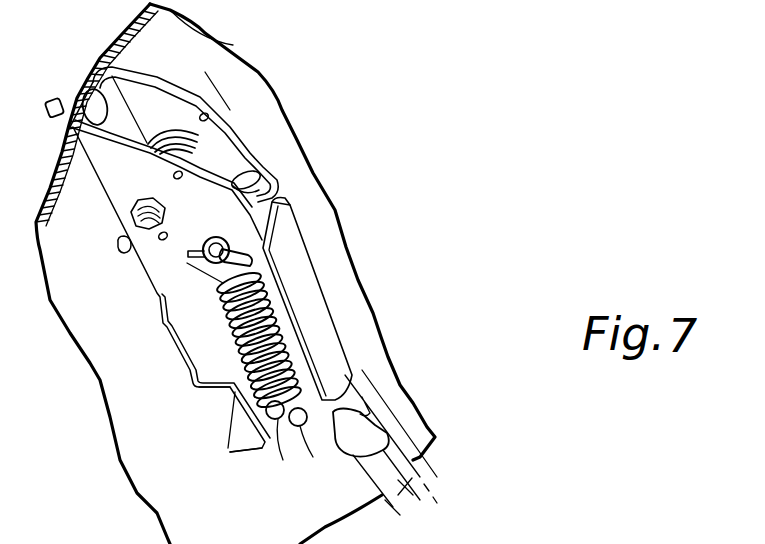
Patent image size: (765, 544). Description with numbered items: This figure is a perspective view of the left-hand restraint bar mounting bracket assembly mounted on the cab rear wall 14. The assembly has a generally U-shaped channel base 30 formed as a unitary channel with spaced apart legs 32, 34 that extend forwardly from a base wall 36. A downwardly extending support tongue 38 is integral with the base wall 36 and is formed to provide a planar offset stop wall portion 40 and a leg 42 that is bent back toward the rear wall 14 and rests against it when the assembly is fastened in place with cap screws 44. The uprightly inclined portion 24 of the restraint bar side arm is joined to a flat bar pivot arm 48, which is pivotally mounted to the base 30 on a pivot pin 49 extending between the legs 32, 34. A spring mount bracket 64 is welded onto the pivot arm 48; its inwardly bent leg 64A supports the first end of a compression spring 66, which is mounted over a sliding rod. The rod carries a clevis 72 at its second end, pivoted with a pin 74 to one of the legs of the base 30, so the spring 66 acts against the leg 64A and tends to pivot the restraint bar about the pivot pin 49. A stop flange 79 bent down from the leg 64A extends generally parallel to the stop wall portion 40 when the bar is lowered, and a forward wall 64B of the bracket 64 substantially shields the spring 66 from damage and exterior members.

The rear wall 14 is at (303, 150).
The uprightly inclined portions 24 is at (398, 517).
The channel base 30 is at (163, 100).
The leg 32 is at (230, 110).
The leg 34 is at (140, 183).
The base wall 36 is at (118, 74).
The support tongue 38 is at (177, 357).
The stop wall portion 40 is at (230, 403).
The leg 42 is at (227, 450).
The cap screws 44 is at (58, 98).
The pivot arm 48 is at (215, 160).
The pivot pin 49 is at (132, 253).
The spring mount bracket 64 is at (290, 268).
The inwardly bent leg 64A is at (313, 427).
The forward wall 64B is at (280, 230).
The compression spring 66 is at (290, 327).
The clevis 72 is at (213, 273).
The pin 74 is at (214, 236).
The stop flange 79 is at (283, 440).